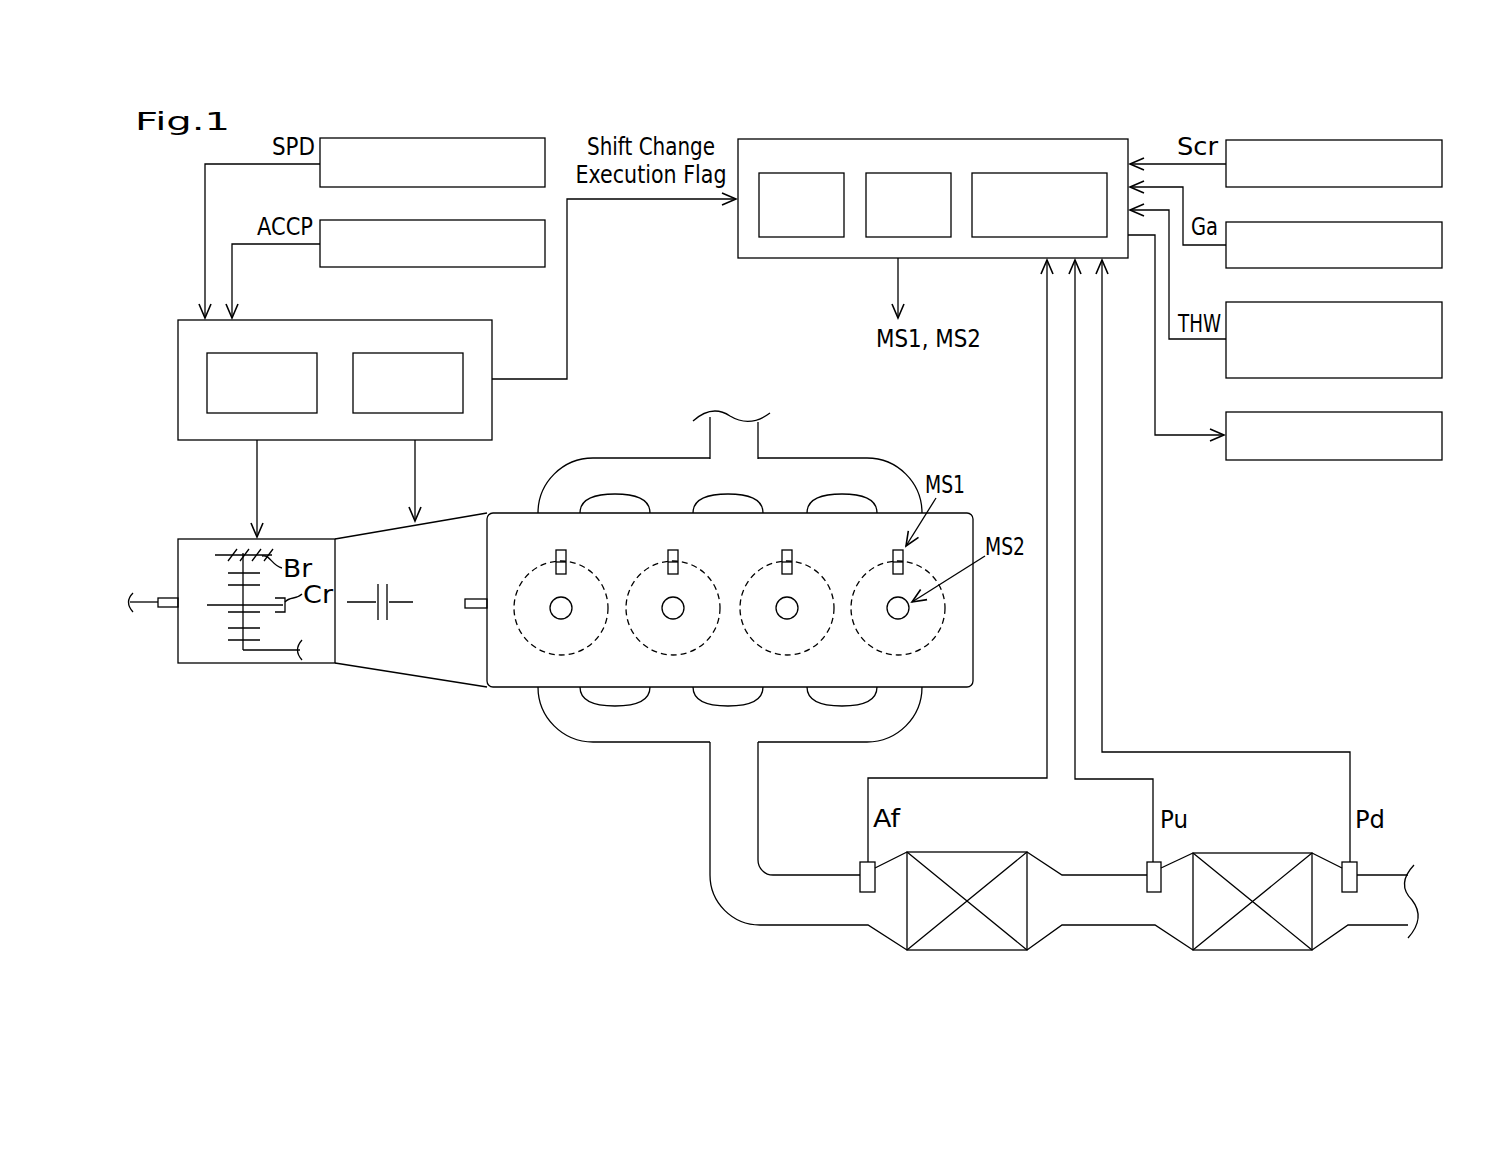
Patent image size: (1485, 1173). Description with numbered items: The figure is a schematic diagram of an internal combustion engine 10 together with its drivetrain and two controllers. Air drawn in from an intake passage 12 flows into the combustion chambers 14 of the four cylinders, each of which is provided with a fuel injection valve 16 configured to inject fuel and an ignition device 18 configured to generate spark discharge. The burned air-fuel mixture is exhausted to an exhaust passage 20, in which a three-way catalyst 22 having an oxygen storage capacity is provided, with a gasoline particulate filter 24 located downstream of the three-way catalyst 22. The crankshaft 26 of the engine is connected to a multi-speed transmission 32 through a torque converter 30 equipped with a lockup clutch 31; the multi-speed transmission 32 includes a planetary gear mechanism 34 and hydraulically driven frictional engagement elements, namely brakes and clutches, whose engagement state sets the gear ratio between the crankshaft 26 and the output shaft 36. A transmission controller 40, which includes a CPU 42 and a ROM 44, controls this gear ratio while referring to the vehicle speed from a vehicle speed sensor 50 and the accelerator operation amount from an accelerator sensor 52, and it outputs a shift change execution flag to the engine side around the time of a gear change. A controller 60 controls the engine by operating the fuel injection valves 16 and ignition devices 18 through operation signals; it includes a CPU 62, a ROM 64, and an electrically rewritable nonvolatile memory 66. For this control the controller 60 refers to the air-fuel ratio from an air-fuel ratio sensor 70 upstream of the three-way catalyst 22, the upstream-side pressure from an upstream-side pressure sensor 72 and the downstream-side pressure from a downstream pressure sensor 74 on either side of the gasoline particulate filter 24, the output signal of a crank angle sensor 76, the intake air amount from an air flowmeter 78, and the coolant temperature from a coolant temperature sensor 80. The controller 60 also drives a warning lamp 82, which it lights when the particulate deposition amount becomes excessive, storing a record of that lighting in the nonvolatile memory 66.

The internal combustion engine 10 is at (828, 430).
The intake passage 12 is at (752, 444).
The combustion chamber 14 is at (535, 597).
The fuel injection valve 16 is at (566, 552).
The ignition device 18 is at (572, 606).
The exhaust passage 20 is at (897, 716).
The three-way catalyst 22 is at (968, 858).
The gasoline particulate filter 24 is at (1253, 858).
The crankshaft 26 is at (466, 598).
The torque converter 30 is at (452, 517).
The lockup clutch 31 is at (375, 583).
The multi-speed transmission 32 is at (299, 538).
The planetary gear mechanism 34 is at (210, 589).
The output shaft 36 is at (160, 597).
The transmission controller 40 is at (427, 319).
The CPU 42 is at (252, 352).
The ROM 44 is at (399, 352).
The vehicle speed sensor 50 is at (478, 137).
The accelerator sensor 52 is at (478, 219).
The controller 60 is at (1050, 138).
The CPU 62 is at (791, 172).
The ROM 64 is at (897, 172).
The nonvolatile memory 66 is at (1029, 172).
The air-fuel ratio sensor 70 is at (860, 860).
The upstream-side pressure sensor 72 is at (1147, 860).
The downstream pressure sensor 74 is at (1342, 860).
The crank angle sensor 76 is at (1375, 139).
The air flowmeter 78 is at (1375, 221).
The coolant temperature sensor 80 is at (1375, 301).
The warning lamp 82 is at (1375, 411).